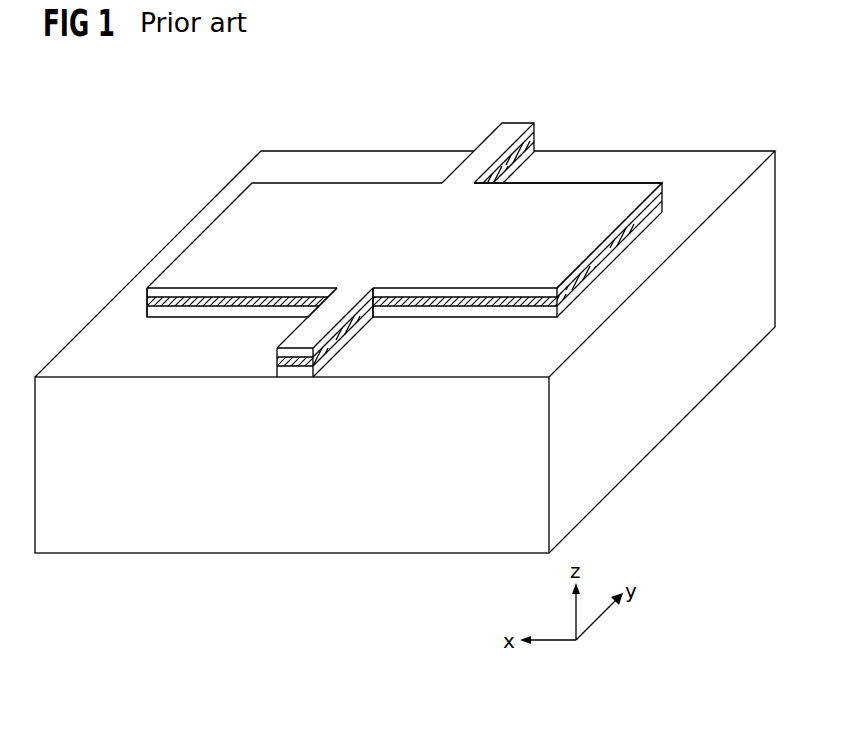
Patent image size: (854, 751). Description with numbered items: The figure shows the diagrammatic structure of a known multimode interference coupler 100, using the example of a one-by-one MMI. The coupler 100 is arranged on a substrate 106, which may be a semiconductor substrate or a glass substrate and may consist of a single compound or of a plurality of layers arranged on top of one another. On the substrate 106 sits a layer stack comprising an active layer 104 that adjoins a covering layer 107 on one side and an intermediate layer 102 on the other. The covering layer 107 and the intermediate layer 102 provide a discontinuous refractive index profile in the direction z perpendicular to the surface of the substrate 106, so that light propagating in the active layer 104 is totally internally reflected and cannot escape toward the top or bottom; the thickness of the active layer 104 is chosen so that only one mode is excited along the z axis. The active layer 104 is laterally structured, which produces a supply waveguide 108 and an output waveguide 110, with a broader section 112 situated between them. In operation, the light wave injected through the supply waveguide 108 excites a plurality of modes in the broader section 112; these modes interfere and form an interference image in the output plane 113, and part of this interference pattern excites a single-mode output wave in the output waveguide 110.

The multimode interference coupler 100 is at (430, 346).
The intermediate layer 102 is at (439, 226).
The active layer 104 is at (143, 302).
The substrate 106 is at (348, 537).
The covering layer 107 is at (662, 190).
The supply waveguide 108 is at (277, 353).
The output waveguide 110 is at (489, 132).
The broader section 112 is at (225, 228).
The output plane 113 is at (592, 182).